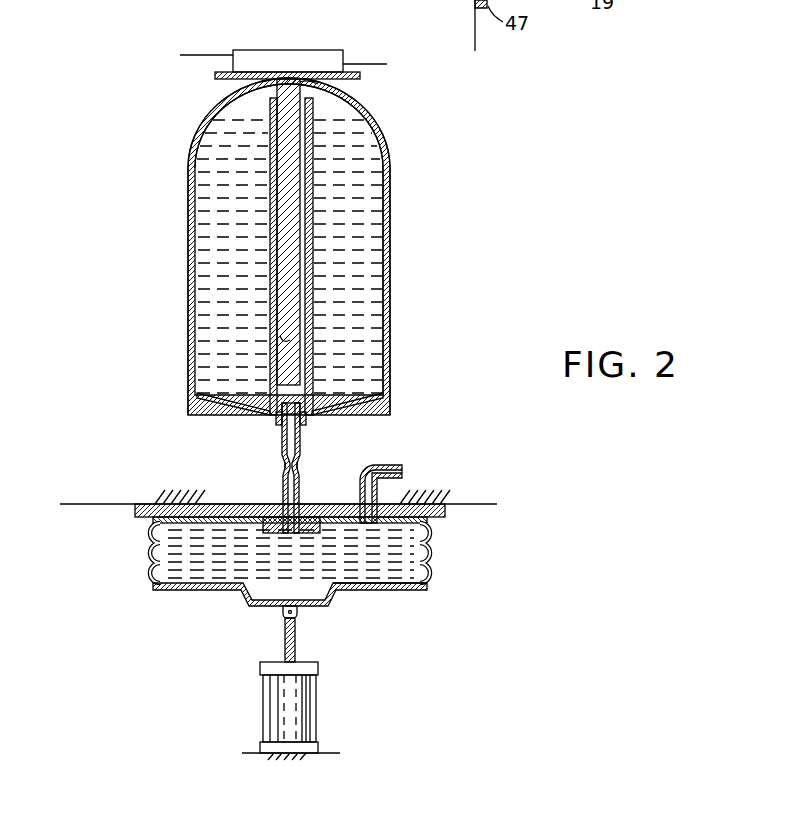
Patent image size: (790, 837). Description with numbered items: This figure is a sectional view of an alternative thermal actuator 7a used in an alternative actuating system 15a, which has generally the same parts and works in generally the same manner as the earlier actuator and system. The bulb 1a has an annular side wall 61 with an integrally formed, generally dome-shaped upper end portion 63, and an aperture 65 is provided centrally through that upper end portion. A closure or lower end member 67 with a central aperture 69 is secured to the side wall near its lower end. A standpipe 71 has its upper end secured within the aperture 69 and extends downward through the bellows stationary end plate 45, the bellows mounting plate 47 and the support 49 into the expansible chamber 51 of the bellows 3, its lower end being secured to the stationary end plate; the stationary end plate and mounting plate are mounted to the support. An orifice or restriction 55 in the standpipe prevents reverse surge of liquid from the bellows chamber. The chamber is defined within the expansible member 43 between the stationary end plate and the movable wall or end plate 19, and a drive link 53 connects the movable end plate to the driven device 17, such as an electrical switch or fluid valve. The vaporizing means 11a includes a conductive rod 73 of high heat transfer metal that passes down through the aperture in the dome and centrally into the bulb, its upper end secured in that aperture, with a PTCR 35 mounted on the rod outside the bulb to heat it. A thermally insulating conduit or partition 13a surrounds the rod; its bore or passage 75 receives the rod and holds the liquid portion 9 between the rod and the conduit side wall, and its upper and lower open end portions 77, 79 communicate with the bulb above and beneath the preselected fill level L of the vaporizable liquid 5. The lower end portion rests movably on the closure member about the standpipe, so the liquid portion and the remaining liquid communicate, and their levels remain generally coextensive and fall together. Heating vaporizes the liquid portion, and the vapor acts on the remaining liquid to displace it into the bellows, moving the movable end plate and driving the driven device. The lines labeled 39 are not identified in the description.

The bulb 1a is at (389, 311).
The bellows 3 is at (396, 593).
The vaporizable liquid 5 is at (386, 264).
The thermal actuator 7a is at (408, 199).
The liquid portion 9 is at (305, 190).
The vaporizing means 11a is at (265, 36).
The conduit or partition 13a is at (312, 318).
The actuating system 15a is at (457, 463).
The driven device 17 is at (302, 705).
The movable wall or end plate 19 is at (168, 592).
The PTCR 35 is at (288, 50).
The flange 39 is at (193, 55).
The expansible member 43 is at (430, 548).
The stationary end plate 45 is at (152, 515).
The bellows mounting plate 47 is at (447, 510).
The support 49 is at (437, 498).
The expansible chamber 51 is at (260, 574).
The drive link 53 is at (292, 634).
The orifice or restriction 55 is at (283, 465).
The annular side wall 61 is at (188, 258).
The dome-shaped upper end portion 63 is at (203, 124).
The aperture 65 is at (273, 80).
The closure or lower end member 67 is at (222, 408).
The aperture 69 is at (304, 422).
The standpipe 71 is at (301, 450).
The conductive rod 73 is at (288, 255).
The bore or passage 75 is at (290, 340).
The upper open end portion 77 is at (303, 83).
The lower open end portion 79 is at (279, 402).
The preselected fill level L is at (345, 118).